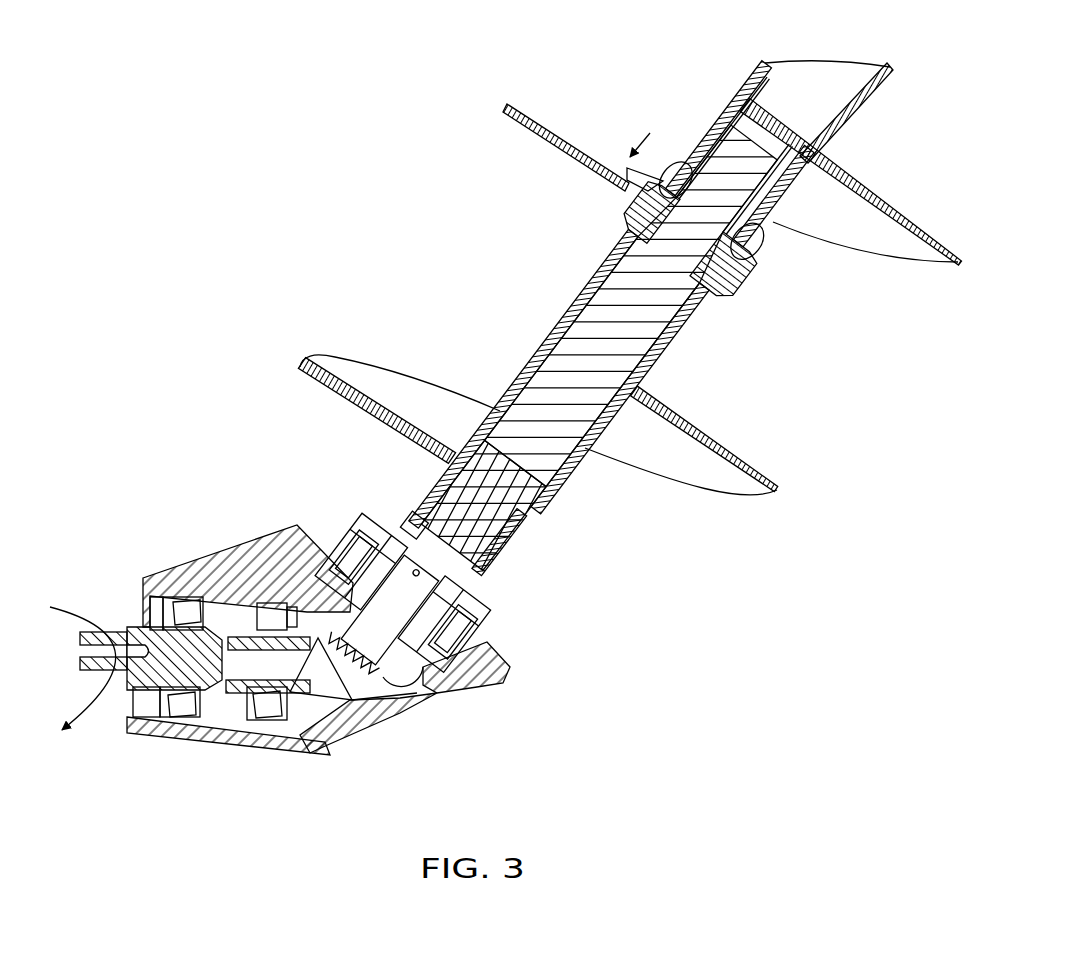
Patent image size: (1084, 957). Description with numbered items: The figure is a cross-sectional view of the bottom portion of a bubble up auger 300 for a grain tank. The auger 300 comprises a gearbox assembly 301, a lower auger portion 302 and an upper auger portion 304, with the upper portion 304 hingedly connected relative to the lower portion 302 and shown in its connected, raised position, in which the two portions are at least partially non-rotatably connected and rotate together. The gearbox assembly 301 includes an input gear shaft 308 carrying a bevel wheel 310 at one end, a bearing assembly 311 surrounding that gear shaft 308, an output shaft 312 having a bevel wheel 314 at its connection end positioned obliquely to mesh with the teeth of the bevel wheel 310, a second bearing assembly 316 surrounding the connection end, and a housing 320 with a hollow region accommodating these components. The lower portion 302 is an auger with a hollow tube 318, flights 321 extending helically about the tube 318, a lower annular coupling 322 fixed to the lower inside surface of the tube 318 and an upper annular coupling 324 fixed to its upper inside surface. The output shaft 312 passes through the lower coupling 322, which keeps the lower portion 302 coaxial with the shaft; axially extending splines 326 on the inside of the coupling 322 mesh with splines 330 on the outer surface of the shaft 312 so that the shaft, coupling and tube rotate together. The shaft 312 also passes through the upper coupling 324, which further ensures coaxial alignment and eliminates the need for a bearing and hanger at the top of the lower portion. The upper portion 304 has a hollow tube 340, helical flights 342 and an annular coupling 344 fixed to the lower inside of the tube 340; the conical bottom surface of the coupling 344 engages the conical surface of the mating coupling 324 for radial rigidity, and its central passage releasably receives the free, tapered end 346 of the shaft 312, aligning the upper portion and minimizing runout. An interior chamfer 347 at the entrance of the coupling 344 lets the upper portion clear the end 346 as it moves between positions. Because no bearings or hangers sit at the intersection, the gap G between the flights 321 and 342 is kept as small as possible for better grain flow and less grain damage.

The bubble up auger 300 is at (502, 423).
The gearbox assembly 301 is at (293, 647).
The lower auger portion 302 is at (569, 345).
The upper auger portion 304 is at (732, 191).
The input gear shaft 308 is at (260, 673).
The bevel wheel 310 is at (307, 617).
The bearing assembly 311 is at (177, 707).
The output shaft 312 is at (540, 430).
The bevel wheel 314 is at (390, 657).
The bearing assembly 316 is at (480, 597).
The hollow tube 318 is at (560, 480).
The housing 320 is at (187, 583).
The flights 321 is at (357, 373).
The lower annular coupling 322 is at (510, 533).
The upper annular coupling 324 is at (740, 270).
The splines 326 is at (410, 510).
The splines 330 is at (490, 487).
The hollow tube 340 is at (857, 107).
The flights 342 is at (887, 203).
The annular coupling 344 is at (733, 120).
The tapered end 346 is at (780, 150).
The interior chamfer 347 is at (757, 240).
The gap G is at (605, 189).